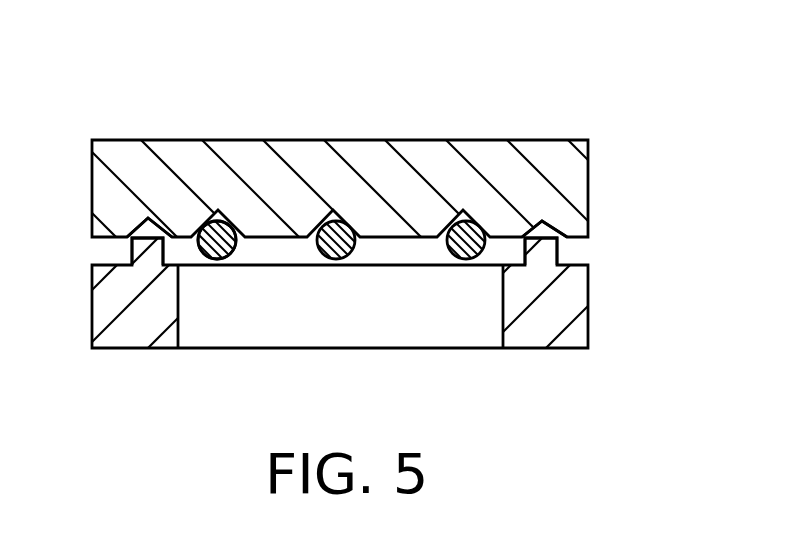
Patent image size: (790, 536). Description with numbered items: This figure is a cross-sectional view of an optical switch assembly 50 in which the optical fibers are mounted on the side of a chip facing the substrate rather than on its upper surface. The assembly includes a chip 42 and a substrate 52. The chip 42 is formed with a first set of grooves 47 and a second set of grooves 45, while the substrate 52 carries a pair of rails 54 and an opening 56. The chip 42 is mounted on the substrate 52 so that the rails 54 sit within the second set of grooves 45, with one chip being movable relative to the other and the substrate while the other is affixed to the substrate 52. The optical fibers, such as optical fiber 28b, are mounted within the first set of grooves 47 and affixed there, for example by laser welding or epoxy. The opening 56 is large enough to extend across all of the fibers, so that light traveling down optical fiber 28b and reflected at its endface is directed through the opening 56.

The optical switch assembly 50 is at (650, 92).
The chip 42 is at (590, 178).
The second set of grooves 45 is at (143, 227).
The first set of grooves 47 is at (218, 213).
The optical fiber 28b is at (453, 253).
The substrate 52 is at (557, 320).
The rails 54 is at (540, 255).
The opening 56 is at (452, 332).